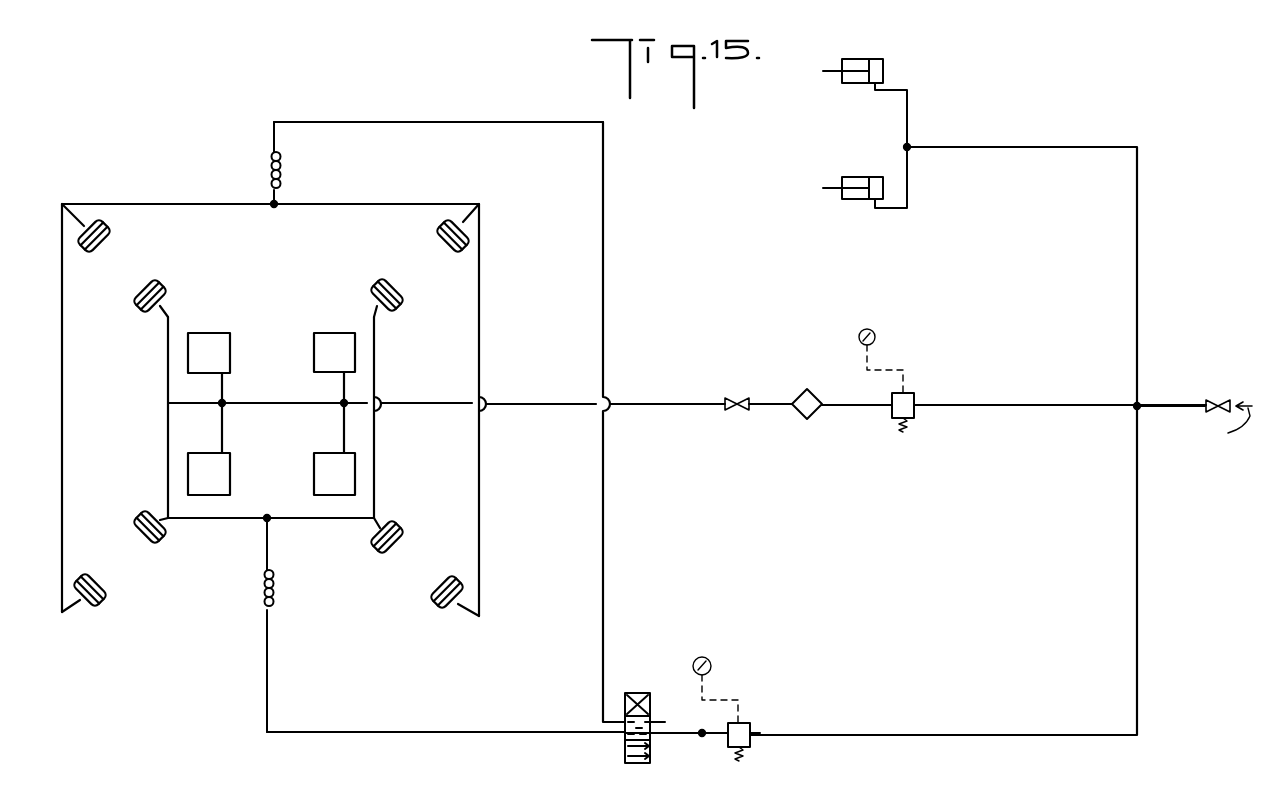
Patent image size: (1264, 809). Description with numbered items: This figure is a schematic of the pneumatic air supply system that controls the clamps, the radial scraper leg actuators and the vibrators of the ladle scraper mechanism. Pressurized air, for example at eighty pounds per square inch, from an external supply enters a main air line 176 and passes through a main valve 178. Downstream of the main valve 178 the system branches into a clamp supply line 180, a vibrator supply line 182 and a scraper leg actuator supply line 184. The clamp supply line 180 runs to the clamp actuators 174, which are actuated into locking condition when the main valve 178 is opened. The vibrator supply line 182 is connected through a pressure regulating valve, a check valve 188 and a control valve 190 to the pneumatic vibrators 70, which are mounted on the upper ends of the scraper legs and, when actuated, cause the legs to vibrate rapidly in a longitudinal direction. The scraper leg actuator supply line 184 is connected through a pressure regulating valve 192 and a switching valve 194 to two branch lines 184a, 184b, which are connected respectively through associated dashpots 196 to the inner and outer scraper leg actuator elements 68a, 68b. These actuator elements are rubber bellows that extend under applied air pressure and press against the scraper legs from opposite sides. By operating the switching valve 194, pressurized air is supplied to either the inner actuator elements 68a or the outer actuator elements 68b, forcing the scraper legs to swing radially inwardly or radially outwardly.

The inner actuator element 68a is at (160, 285).
The outer actuator element 68b is at (113, 233).
The pneumatic vibrator 70 is at (228, 333).
The clamp actuator 174 is at (850, 87).
The main air line 176 is at (1165, 402).
The main valve 178 is at (1216, 399).
The clamp supply line 180 is at (1140, 208).
The vibrator supply line 182 is at (540, 410).
The scraper leg actuator supply line 184 is at (1138, 634).
The branch line 184a is at (499, 730).
The branch line 184b is at (432, 120).
The check valve 188 is at (804, 387).
The control valve 190 is at (731, 412).
The pressure regulating valve 192 is at (745, 712).
The switching valve 194 is at (648, 692).
The dashpot 196 is at (268, 158).